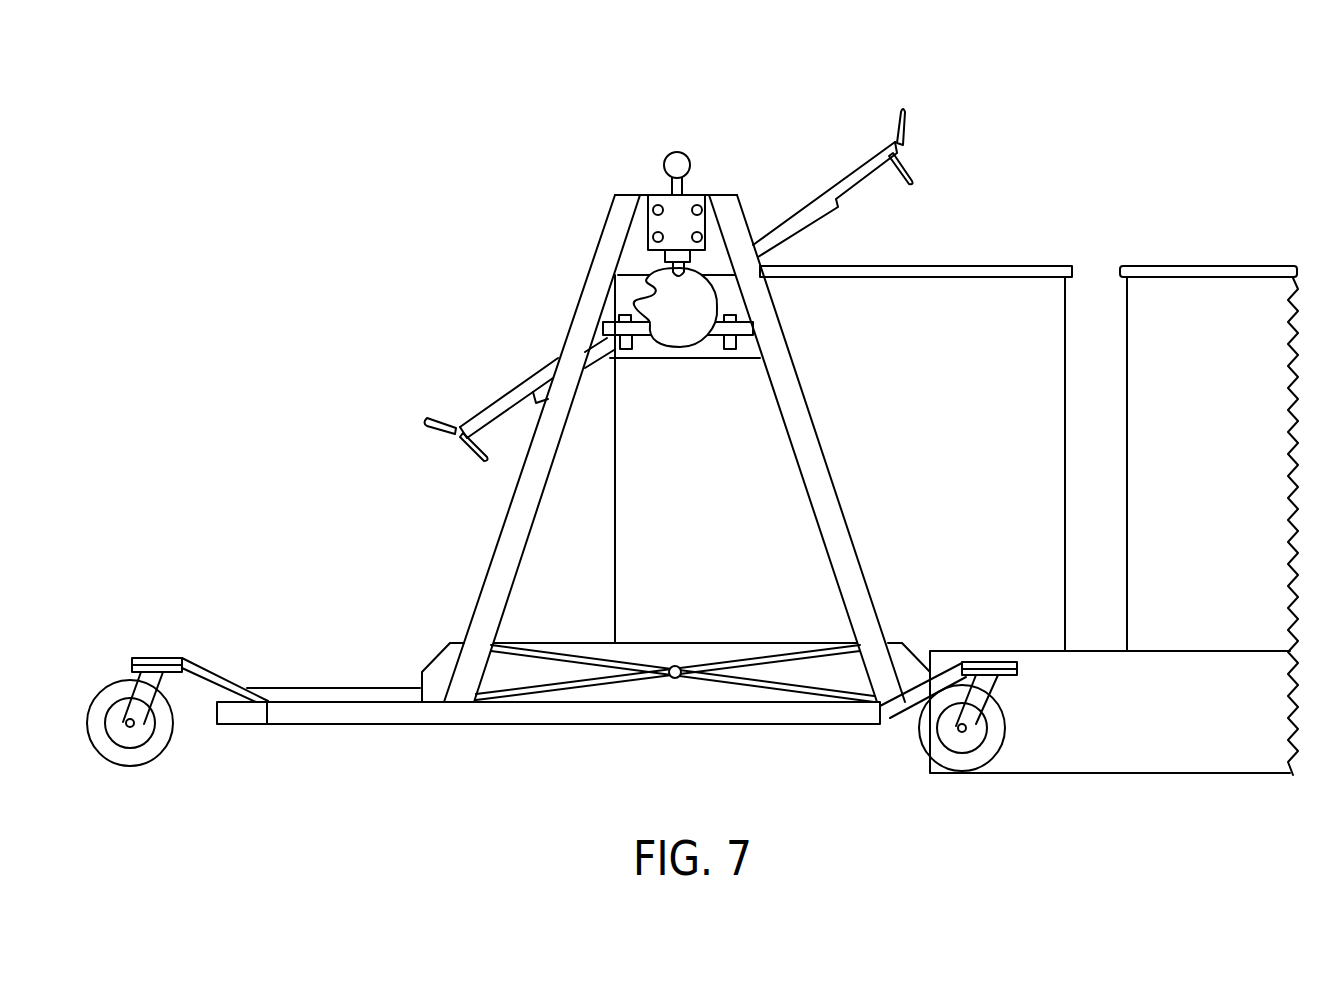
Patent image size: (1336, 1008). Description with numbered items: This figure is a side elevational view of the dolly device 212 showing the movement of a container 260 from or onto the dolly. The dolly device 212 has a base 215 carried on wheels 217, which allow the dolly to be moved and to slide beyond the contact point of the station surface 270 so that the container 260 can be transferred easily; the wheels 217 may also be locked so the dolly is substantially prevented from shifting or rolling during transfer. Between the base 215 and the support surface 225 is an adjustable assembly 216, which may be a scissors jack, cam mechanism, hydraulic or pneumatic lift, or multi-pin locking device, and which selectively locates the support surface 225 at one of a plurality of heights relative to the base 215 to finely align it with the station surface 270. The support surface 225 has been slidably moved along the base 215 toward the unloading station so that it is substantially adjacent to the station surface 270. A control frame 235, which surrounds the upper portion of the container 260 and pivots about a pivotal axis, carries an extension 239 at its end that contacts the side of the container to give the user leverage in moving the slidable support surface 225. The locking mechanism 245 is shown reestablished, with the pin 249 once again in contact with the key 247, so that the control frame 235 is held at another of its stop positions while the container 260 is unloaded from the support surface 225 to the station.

The dolly device 212 is at (192, 161).
The base 215 is at (340, 715).
The adjustable assembly 216 is at (664, 698).
The wheels 217 is at (134, 762).
The support surface 225 is at (558, 624).
The control frame 235 is at (849, 177).
The extension 239 is at (911, 172).
The locking mechanism 245 is at (722, 247).
The key 247 is at (680, 348).
The pin 249 is at (667, 259).
The container 260 is at (1045, 280).
The station surface 270 is at (1084, 650).